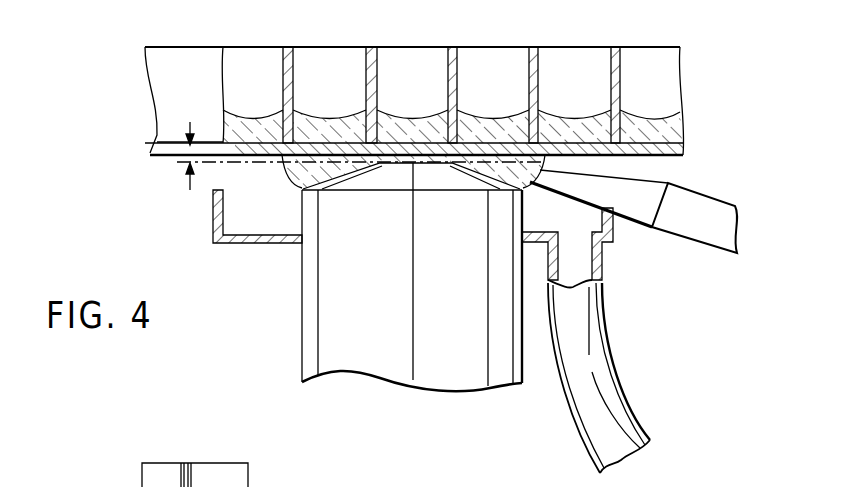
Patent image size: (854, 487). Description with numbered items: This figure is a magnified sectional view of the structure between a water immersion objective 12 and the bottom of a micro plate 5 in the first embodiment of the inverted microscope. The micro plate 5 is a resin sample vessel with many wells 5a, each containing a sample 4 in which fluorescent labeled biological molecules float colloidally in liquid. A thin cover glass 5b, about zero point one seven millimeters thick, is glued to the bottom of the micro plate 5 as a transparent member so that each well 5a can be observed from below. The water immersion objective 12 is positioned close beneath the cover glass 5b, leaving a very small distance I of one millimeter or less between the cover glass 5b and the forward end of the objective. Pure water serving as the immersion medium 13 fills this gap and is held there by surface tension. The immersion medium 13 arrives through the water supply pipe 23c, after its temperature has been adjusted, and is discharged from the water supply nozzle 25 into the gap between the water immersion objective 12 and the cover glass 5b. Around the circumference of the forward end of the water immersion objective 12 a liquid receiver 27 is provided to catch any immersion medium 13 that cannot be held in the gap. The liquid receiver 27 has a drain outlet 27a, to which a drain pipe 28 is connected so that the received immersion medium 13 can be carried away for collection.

The sample 4 is at (398, 125).
The micro plate 5 is at (190, 77).
The well 5a is at (330, 75).
The cover glass 5b is at (247, 157).
The distance I is at (177, 162).
The water immersion objective 12 is at (310, 294).
The immersion medium 13 is at (295, 184).
The water supply nozzle 25 is at (623, 187).
The water supply pipe 23c is at (717, 240).
The liquid receiver 27 is at (217, 245).
The drain outlet 27a is at (605, 272).
The drain pipe 28 is at (607, 397).